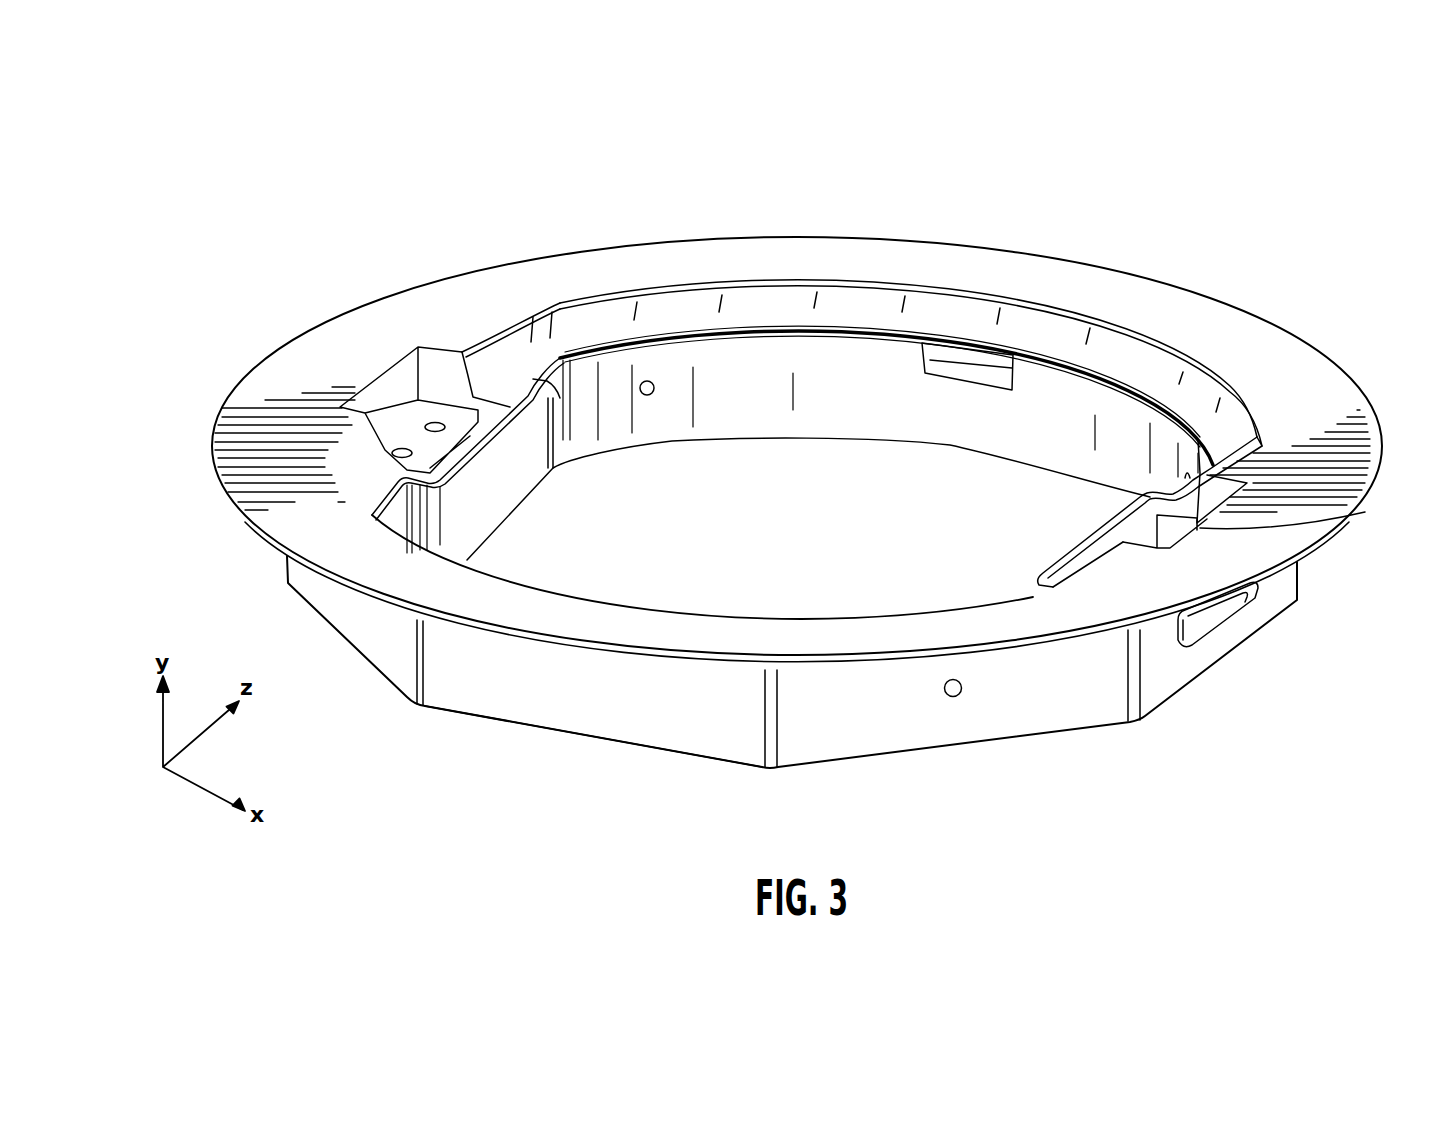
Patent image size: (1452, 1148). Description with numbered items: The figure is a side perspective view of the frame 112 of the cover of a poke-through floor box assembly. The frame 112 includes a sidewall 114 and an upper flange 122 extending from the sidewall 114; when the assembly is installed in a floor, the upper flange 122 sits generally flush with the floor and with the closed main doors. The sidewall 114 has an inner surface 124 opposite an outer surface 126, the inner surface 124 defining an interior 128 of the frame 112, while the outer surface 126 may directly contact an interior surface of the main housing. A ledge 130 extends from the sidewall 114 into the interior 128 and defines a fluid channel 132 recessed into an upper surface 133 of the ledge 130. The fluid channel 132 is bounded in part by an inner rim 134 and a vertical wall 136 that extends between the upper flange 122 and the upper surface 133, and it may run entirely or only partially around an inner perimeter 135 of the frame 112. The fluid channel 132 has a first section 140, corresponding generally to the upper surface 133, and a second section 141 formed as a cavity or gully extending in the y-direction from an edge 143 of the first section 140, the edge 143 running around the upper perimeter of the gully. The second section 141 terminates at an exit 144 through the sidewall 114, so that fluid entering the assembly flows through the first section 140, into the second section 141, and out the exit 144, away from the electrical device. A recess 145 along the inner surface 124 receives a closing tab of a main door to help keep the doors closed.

The frame 112 is at (817, 452).
The sidewall 114 is at (895, 715).
The upper flange 122 is at (1186, 312).
The inner surface 124 is at (878, 368).
The outer surface 126 is at (684, 721).
The interior 128 is at (748, 545).
The ledge 130 is at (504, 388).
The fluid channel 132 is at (1215, 446).
The upper surface 133 is at (362, 497).
The inner rim 134 is at (1062, 550).
The inner perimeter 135 is at (672, 445).
The vertical wall 136 is at (572, 320).
The first section 140 is at (740, 325).
The second section 141 is at (1163, 530).
The edge 143 is at (490, 388).
The exit 144 is at (1193, 622).
The recess 145 is at (930, 378).